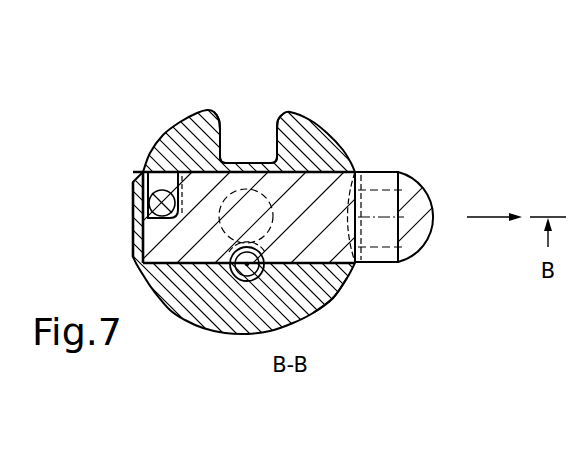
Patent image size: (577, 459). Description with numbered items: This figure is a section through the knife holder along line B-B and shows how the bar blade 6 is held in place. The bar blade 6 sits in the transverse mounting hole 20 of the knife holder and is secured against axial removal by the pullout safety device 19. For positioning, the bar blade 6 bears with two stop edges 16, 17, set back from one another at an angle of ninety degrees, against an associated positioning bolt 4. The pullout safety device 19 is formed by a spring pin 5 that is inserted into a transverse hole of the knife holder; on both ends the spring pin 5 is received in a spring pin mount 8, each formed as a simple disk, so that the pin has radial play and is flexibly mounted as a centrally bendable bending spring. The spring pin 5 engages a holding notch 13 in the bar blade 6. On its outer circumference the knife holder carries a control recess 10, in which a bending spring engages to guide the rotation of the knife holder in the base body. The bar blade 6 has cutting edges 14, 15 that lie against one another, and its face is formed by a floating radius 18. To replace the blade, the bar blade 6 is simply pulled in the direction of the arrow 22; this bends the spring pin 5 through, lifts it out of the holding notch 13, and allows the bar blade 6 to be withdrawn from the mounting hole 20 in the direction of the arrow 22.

The positioning bolt 4 is at (152, 190).
The spring pin 5 is at (245, 268).
The bar blade 6 is at (350, 265).
The spring pin mount 8 is at (237, 270).
The control recess 10 is at (233, 140).
The holding notch 13 is at (249, 258).
The cutting edge 14 is at (372, 172).
The cutting edge 15 is at (382, 263).
The stop edge 16 is at (150, 218).
The stop edge 17 is at (178, 183).
The floating radius 18 is at (427, 198).
The pullout safety device 19 is at (248, 270).
The mounting hole 20 is at (323, 292).
The arrow 22 is at (472, 219).